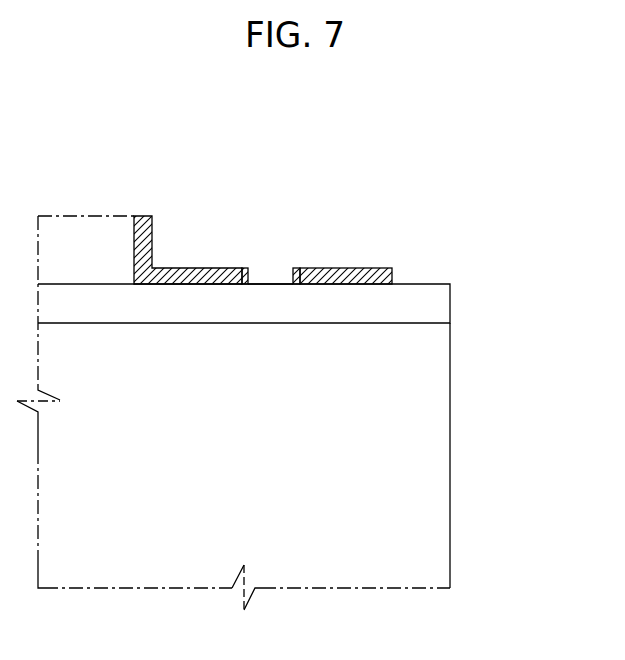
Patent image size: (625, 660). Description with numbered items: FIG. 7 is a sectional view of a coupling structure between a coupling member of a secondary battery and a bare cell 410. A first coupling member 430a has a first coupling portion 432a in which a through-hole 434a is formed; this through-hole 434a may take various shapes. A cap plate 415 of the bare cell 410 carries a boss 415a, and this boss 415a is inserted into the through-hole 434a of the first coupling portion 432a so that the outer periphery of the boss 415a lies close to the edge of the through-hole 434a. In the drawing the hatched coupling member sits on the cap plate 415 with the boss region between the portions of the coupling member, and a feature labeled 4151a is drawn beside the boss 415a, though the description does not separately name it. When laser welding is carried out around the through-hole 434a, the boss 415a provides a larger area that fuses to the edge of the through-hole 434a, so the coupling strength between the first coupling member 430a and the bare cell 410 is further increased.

The bare cell 410 is at (475, 368).
The cap plate 415 is at (442, 305).
The boss 415a is at (272, 272).
The side wall of opening 4151a is at (303, 268).
The first coupling member 430a is at (169, 238).
The first coupling portion 432a is at (348, 267).
The through-hole 434a is at (250, 267).